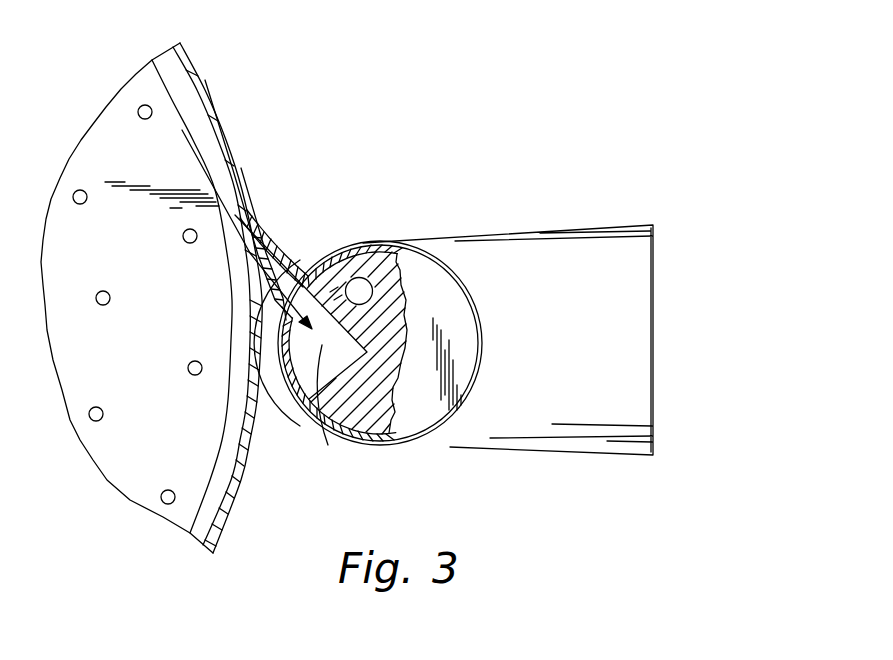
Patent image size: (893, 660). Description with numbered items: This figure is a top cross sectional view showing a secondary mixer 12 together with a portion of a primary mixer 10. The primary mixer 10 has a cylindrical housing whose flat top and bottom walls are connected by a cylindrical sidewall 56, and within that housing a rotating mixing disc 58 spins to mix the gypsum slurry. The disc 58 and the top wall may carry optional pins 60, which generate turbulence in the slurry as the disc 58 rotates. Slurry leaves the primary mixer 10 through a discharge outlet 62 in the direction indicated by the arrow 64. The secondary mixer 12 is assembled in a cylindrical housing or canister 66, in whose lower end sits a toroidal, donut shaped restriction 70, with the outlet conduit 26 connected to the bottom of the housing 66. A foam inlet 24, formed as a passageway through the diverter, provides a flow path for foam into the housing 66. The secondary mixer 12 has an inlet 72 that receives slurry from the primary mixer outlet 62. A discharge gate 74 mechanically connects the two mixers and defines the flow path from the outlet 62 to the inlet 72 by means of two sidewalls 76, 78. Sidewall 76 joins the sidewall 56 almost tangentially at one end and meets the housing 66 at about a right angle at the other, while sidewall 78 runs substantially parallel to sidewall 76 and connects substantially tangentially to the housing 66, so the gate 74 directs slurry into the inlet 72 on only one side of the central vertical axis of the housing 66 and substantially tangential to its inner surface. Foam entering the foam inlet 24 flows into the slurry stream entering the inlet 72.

The primary mixer 10 is at (222, 53).
The secondary mixer 12 is at (407, 212).
The foam inlet 24 is at (356, 278).
The outlet conduit 26 is at (580, 242).
The cylindrical sidewall 56 is at (221, 118).
The rotating mixing disc 58 is at (165, 352).
The pins 60 is at (183, 236).
The discharge outlet 62 is at (255, 279).
The arrow 64 is at (244, 175).
The cylindrical housing 66 is at (356, 445).
The toroidal restriction 70 is at (327, 440).
The inlet 72 is at (331, 327).
The discharge gate 74 is at (301, 208).
The sidewall 76 is at (266, 221).
The sidewall 78 is at (270, 307).